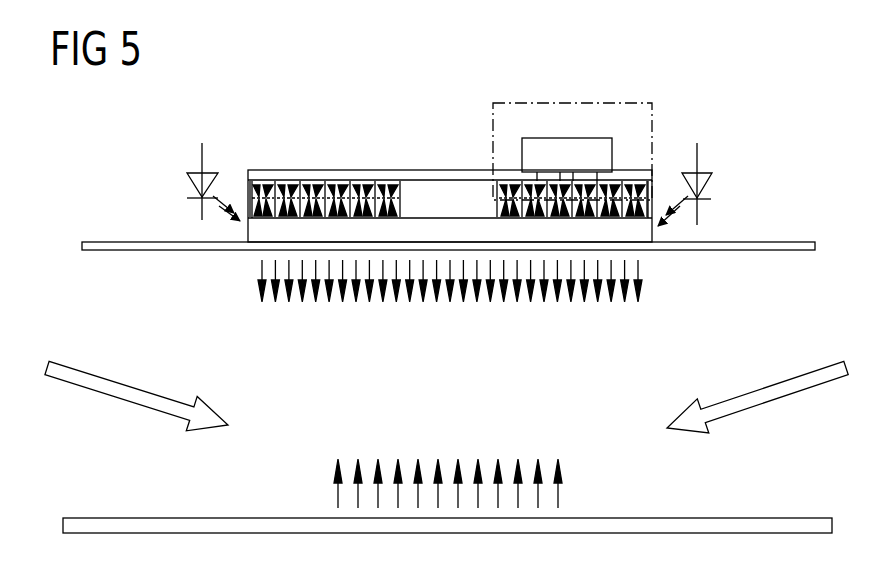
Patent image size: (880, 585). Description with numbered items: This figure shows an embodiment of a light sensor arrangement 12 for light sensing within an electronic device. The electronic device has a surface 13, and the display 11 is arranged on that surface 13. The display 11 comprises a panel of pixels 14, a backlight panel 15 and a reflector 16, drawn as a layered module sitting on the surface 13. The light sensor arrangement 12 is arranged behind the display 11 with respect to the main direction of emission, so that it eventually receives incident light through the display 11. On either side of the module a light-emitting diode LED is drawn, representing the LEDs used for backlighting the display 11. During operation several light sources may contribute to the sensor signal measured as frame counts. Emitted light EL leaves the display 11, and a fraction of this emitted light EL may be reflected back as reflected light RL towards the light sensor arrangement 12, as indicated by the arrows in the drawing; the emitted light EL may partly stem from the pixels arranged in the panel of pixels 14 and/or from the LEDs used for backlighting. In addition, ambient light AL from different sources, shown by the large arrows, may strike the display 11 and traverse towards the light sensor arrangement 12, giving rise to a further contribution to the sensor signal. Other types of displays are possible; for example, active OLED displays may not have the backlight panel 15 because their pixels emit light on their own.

The display 11 is at (798, 222).
The light sensor arrangement 12 is at (572, 138).
The surface 13 is at (730, 251).
The panel of pixels 14 is at (253, 251).
The backlight panel 15 is at (438, 185).
The reflector 16 is at (334, 171).
The light-emitting diode LED is at (188, 192).
The emitted light EL is at (648, 196).
The ambient light AL is at (772, 387).
The reflected light RL is at (558, 490).